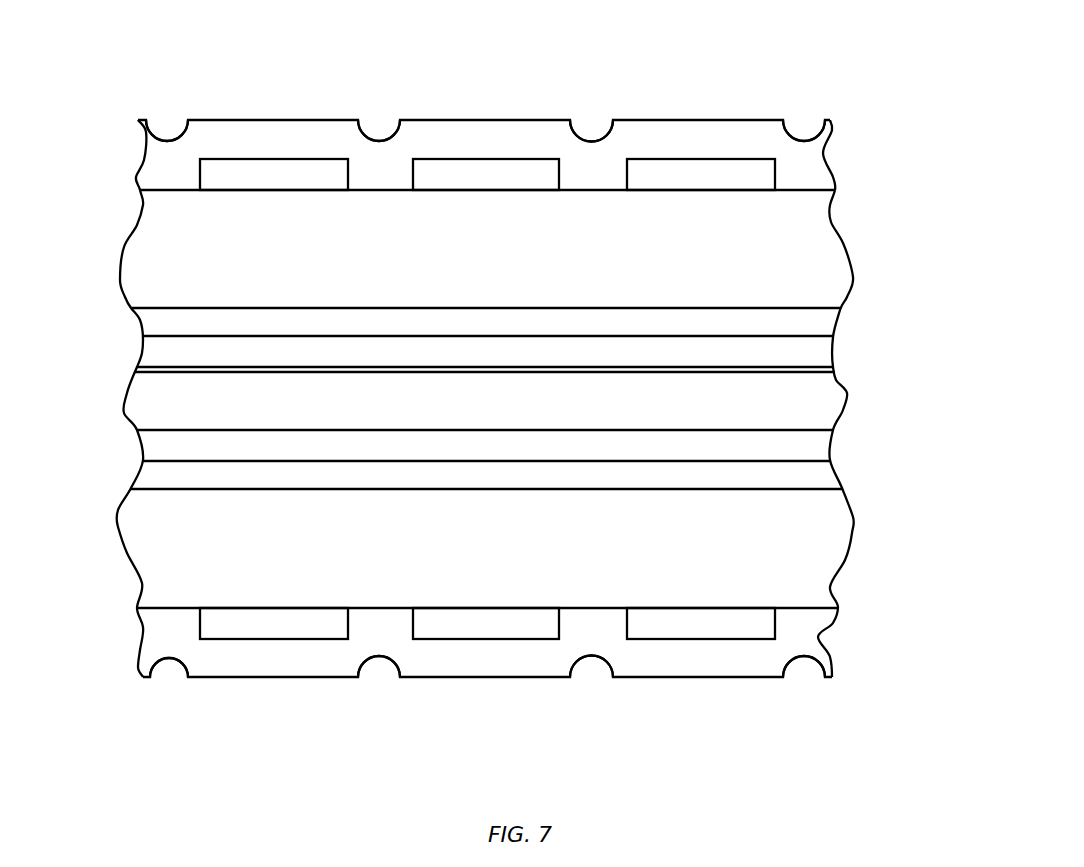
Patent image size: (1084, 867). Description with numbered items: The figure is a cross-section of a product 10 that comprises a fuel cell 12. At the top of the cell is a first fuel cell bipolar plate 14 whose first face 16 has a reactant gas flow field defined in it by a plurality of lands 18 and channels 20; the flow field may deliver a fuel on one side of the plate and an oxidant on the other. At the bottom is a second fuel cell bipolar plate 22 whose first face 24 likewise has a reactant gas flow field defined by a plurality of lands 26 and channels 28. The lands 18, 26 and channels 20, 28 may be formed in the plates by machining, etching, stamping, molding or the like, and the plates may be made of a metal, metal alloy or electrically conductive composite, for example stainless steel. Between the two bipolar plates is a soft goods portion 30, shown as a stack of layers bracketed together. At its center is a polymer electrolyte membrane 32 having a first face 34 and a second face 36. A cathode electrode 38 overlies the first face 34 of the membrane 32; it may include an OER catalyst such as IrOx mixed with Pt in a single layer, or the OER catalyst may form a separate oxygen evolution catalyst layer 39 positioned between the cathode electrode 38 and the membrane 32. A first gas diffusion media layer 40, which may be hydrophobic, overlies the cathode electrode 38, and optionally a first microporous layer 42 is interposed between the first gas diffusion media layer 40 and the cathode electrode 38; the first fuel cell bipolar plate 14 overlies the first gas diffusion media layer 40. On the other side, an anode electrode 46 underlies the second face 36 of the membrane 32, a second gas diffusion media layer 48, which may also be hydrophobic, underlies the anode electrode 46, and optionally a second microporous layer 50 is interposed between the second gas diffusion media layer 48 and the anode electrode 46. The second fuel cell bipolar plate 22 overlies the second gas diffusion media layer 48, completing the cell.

The product 10 is at (890, 92).
The fuel cell 12 is at (873, 75).
The first fuel cell bipolar plate 14 is at (820, 153).
The first face 16 is at (800, 192).
The lands 18 is at (175, 190).
The channels 20 is at (447, 159).
The second fuel cell bipolar plate 22 is at (817, 633).
The first face 24 is at (800, 605).
The lands 26 is at (358, 604).
The channels 28 is at (437, 638).
The soft goods portion 30 is at (132, 190).
The polymer electrolyte membrane 32 is at (813, 402).
The first face 34 is at (840, 365).
The second face 36 is at (807, 432).
The cathode electrode 38 is at (810, 350).
The oxygen evolution catalyst layer 39 is at (807, 367).
The first gas diffusion media layer 40 is at (828, 263).
The first microporous layer 42 is at (823, 320).
The anode electrode 46 is at (802, 445).
The second gas diffusion media layer 48 is at (815, 550).
The second microporous layer 50 is at (817, 477).